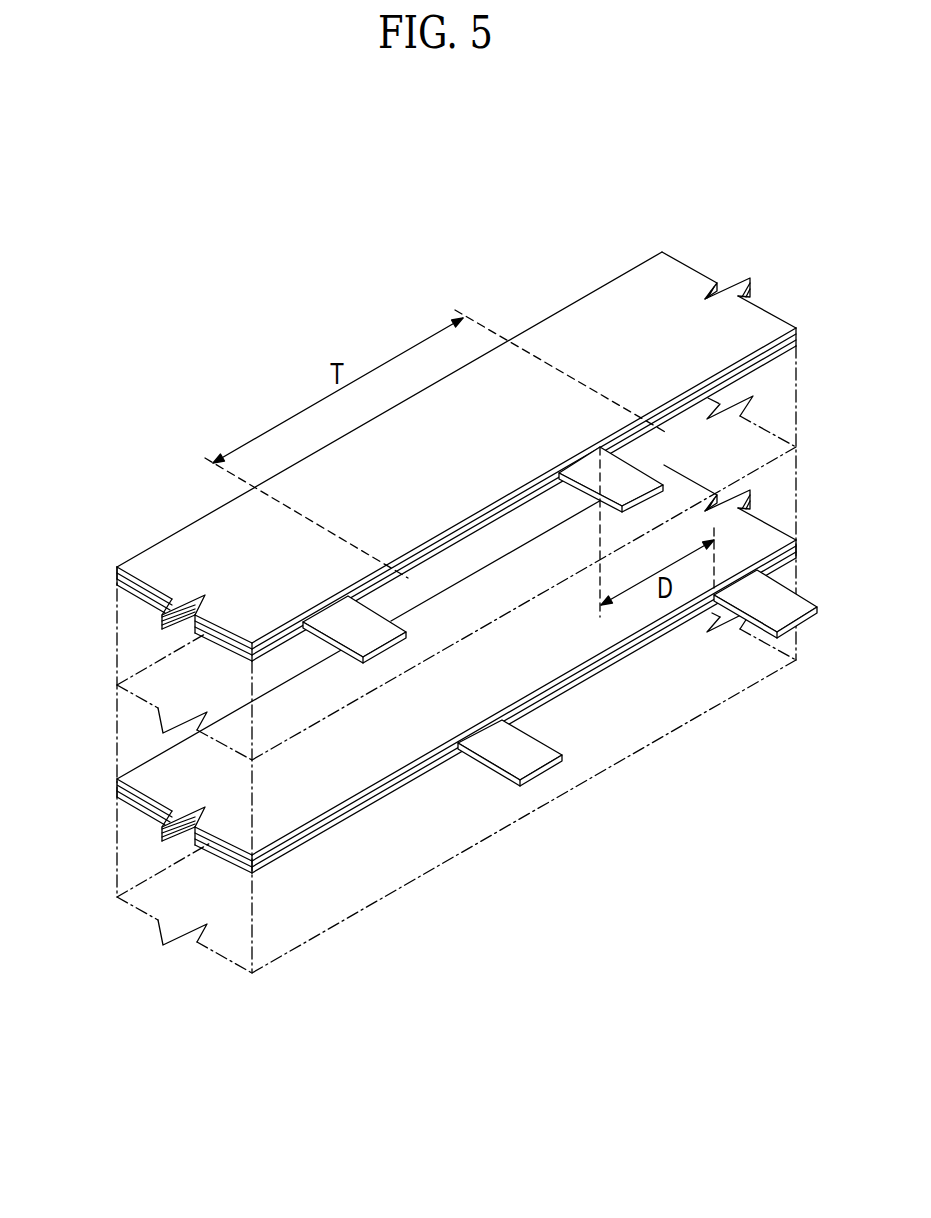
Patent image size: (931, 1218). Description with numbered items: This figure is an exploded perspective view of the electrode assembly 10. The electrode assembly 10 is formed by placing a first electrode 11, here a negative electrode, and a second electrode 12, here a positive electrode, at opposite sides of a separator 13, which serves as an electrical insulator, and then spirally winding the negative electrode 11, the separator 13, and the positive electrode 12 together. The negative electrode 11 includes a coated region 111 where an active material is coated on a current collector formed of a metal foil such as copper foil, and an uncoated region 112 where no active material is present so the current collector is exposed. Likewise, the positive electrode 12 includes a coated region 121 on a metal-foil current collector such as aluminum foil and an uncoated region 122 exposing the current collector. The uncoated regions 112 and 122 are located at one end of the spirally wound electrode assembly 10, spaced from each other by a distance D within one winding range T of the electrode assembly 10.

The electrode assembly 10 is at (376, 281).
The first electrode 11 is at (440, 712).
The second electrode 12 is at (429, 454).
The separator 13 is at (282, 743).
The coated region 111 is at (337, 773).
The uncoated region 112 is at (527, 755).
The coated region 121 is at (183, 548).
The uncoated region 122 is at (375, 625).